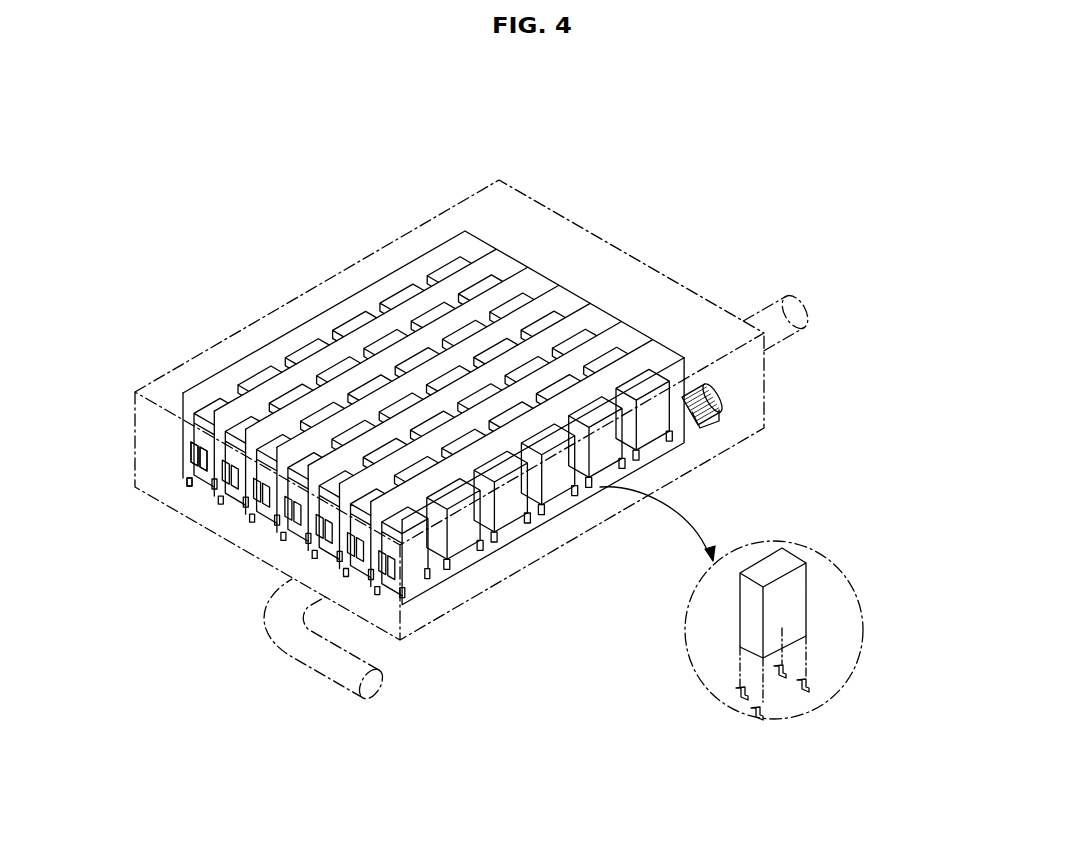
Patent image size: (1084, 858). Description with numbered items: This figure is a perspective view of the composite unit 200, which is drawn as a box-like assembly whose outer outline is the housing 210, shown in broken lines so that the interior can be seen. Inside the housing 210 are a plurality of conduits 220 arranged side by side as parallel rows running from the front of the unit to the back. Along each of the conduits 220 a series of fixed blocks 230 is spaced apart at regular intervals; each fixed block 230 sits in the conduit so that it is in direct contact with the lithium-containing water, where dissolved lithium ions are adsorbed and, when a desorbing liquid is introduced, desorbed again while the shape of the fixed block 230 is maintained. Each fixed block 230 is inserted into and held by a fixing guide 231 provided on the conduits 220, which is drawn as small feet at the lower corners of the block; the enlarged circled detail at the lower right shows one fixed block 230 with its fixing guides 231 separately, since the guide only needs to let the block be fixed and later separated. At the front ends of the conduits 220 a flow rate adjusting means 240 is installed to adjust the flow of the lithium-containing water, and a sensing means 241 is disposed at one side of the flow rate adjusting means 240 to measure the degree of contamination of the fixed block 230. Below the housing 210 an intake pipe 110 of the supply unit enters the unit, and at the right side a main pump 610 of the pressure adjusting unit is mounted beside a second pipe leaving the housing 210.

The composite unit 200 is at (676, 170).
The housing 210 is at (305, 291).
The plurality of conduits 220 is at (206, 395).
The fixed block 230 is at (217, 403).
The fixing guide 231 is at (190, 472).
The flow rate adjusting means 240 is at (223, 470).
The sensing means 241 is at (233, 477).
The intake pipe 110 is at (322, 665).
The main pump 610 is at (714, 398).